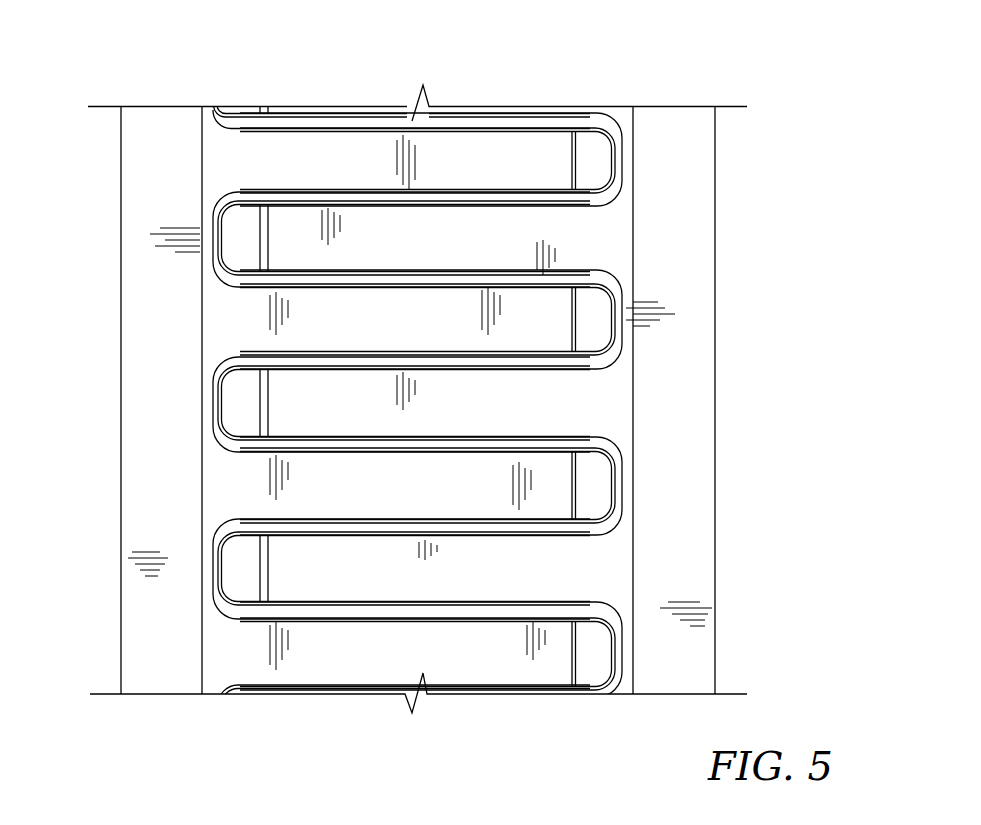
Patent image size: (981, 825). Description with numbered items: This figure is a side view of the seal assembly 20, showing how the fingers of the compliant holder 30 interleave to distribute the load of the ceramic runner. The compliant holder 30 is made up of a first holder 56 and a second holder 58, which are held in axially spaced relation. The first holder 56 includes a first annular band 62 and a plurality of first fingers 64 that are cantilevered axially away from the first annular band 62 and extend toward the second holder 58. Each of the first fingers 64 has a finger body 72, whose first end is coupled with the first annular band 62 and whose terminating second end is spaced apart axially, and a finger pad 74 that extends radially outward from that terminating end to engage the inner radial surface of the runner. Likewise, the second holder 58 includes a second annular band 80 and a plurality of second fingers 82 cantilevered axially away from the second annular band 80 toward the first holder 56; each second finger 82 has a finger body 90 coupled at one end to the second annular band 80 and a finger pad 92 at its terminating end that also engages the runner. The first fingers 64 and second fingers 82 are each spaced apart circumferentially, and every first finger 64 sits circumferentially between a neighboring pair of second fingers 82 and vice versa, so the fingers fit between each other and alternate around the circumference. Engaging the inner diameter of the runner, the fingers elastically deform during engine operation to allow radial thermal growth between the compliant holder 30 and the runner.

The seal assembly 20 is at (815, 75).
The compliant holder 30 is at (90, 525).
The first holder 56 is at (146, 119).
The second holder 58 is at (696, 118).
The first annular band 62 is at (120, 455).
The first fingers 64 is at (306, 317).
The finger body 72 is at (372, 232).
The finger pad 74 is at (592, 296).
The second annular band 80 is at (696, 487).
The second fingers 82 is at (599, 396).
The finger body 90 is at (410, 425).
The finger pad 92 is at (224, 397).